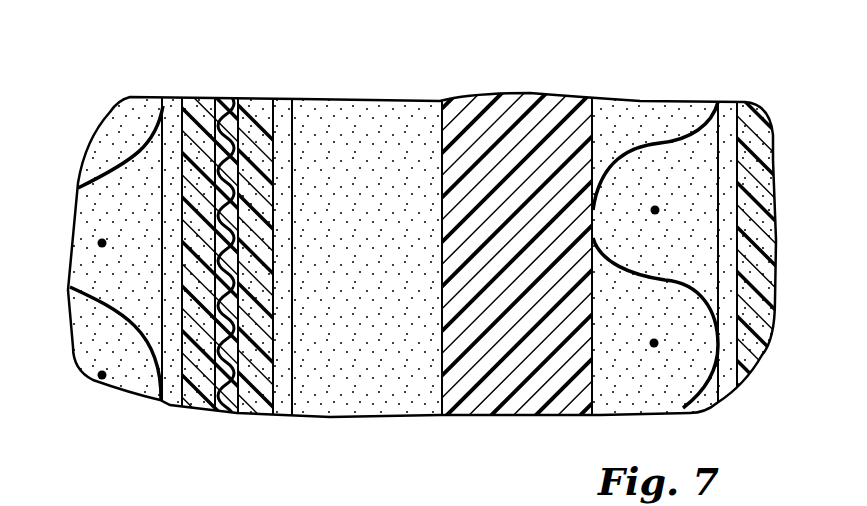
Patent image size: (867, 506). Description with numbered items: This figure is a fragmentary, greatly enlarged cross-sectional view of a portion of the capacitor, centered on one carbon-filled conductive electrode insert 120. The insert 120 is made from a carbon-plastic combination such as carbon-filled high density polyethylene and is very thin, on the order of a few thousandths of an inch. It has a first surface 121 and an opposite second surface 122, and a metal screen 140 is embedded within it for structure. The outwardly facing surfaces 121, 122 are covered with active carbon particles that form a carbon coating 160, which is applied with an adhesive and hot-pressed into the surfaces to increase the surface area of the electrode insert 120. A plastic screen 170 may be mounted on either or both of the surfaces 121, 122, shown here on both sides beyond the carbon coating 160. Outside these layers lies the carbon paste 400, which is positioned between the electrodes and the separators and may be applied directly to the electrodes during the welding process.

The conductive electrode insert 120 is at (480, 264).
The first surface 121 is at (170, 403).
The second surface 122 is at (270, 410).
The metal screen 140 is at (230, 413).
The carbon coating 160 is at (175, 104).
The plastic screen 170 is at (137, 157).
The carbon paste 400 is at (400, 112).